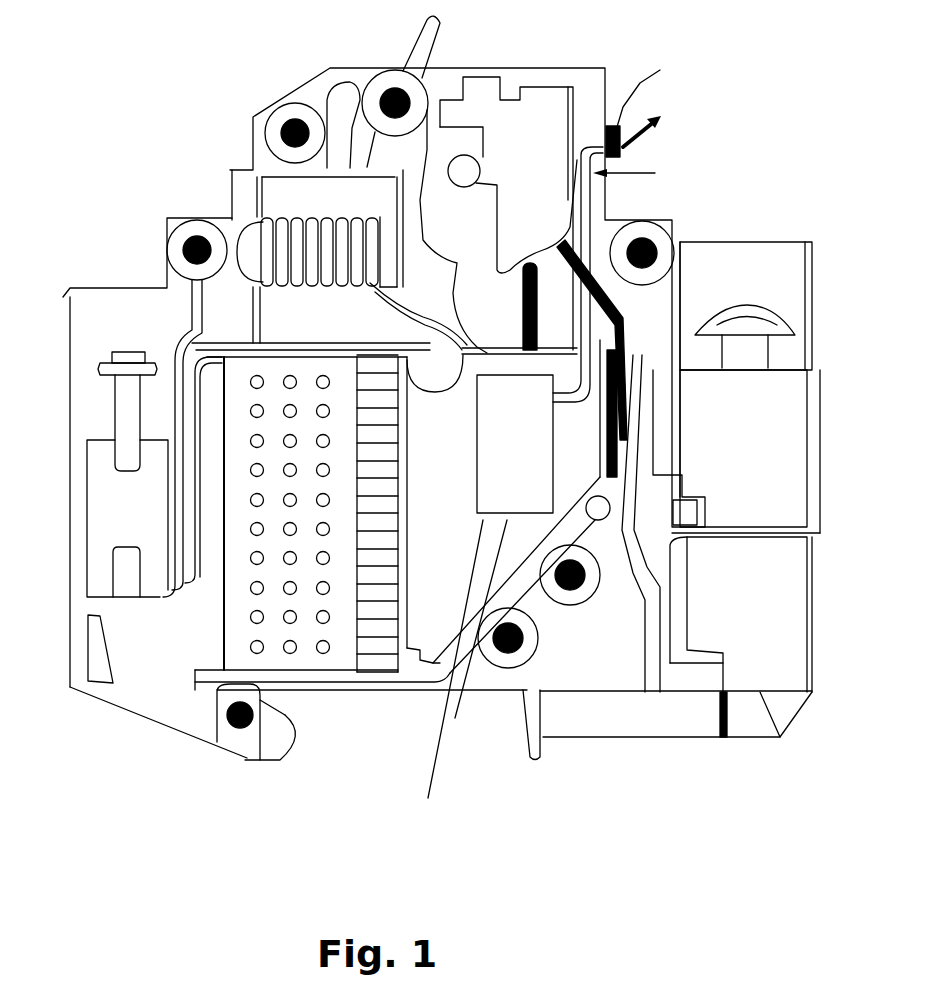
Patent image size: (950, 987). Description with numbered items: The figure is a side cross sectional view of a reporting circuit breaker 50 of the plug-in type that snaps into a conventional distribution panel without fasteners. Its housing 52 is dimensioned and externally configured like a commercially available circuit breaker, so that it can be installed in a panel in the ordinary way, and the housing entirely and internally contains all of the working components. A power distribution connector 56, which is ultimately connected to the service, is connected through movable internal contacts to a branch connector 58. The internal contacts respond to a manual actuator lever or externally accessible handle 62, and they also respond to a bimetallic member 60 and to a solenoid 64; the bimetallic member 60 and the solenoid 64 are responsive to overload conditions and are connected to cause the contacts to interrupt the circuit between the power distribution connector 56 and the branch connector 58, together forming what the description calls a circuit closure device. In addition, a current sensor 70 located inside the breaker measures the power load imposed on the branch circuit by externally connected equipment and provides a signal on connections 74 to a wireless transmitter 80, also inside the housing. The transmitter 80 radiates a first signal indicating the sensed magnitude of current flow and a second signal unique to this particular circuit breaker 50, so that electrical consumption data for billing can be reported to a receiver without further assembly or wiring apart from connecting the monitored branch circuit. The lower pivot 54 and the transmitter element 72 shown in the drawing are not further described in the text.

The circuit breaker 50 is at (470, 865).
The housing 52 is at (183, 730).
The lower pivot 54 is at (287, 713).
The power distribution connector 56 is at (765, 737).
The branch connector 58 is at (808, 368).
The bimetallic member 60 is at (637, 387).
The handle 62 is at (428, 16).
The solenoid 64 is at (280, 258).
The current sensor 70 is at (456, 715).
The wireless transmitter 72 is at (608, 135).
The connections 74 is at (603, 161).
The wireless transmitter 80 is at (645, 137).